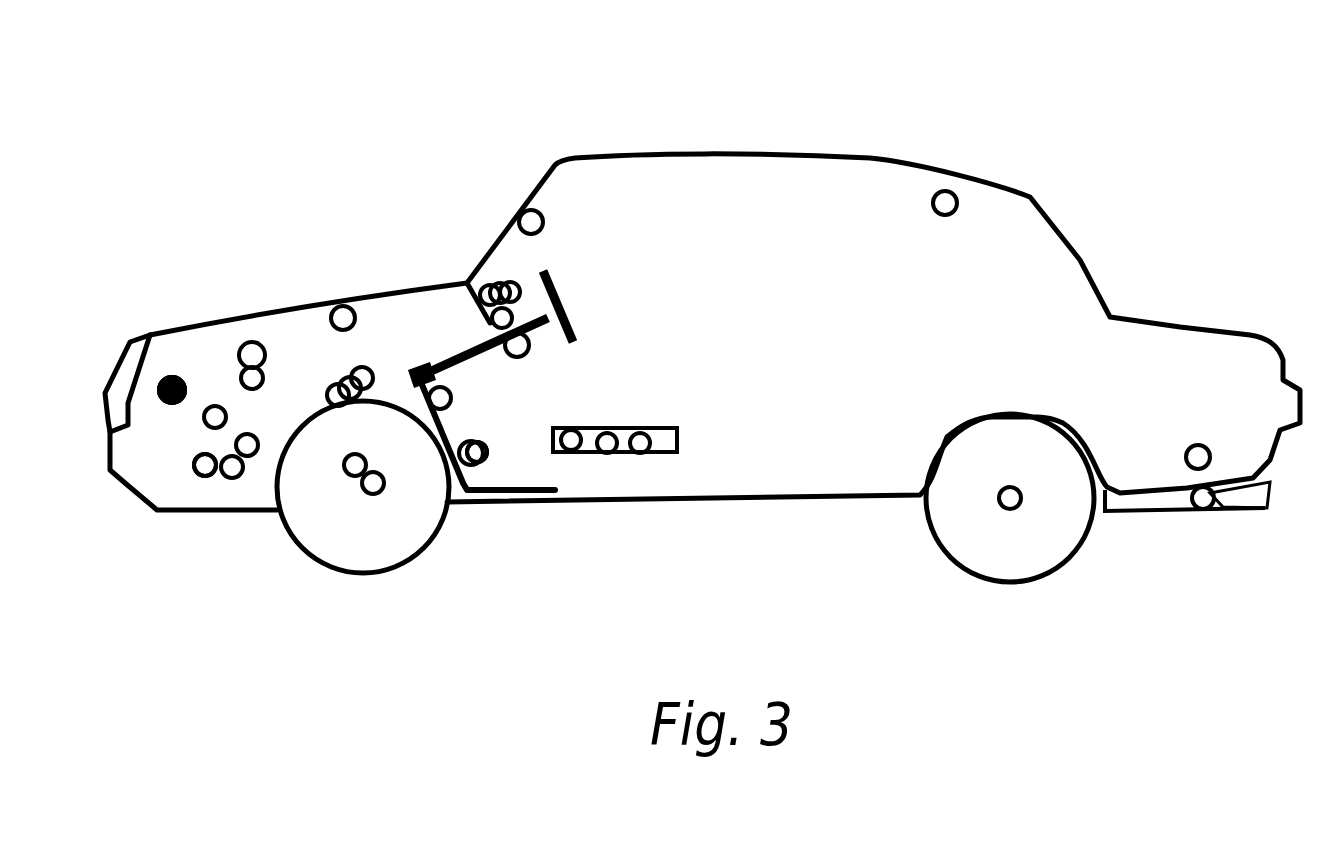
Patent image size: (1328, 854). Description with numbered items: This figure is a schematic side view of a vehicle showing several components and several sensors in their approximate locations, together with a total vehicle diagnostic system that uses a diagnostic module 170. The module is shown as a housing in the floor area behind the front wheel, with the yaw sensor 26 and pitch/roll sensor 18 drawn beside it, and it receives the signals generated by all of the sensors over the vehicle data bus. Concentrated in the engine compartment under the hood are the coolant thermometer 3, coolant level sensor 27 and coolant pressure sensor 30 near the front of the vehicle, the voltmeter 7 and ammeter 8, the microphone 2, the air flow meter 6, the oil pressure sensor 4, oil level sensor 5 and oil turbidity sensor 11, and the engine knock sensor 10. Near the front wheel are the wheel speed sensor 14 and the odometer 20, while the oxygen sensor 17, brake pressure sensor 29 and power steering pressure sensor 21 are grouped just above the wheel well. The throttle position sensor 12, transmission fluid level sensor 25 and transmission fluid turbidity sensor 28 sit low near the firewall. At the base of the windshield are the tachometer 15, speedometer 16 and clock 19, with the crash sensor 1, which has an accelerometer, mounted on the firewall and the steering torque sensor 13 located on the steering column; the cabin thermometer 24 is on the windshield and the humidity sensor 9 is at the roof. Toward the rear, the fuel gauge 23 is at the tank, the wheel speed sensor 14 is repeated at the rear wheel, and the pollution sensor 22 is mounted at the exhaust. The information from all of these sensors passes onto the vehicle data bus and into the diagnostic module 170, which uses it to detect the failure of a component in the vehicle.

The crash sensor 1 is at (446, 408).
The microphone 2 is at (340, 307).
The coolant thermometer 3 is at (186, 382).
The oil pressure sensor 4 is at (193, 461).
The oil level sensor 5 is at (194, 461).
The air flow meter 6 is at (205, 421).
The voltmeter 7 is at (243, 350).
The ammeter 8 is at (243, 386).
The humidity sensor 9 is at (937, 193).
The engine knock sensor 10 is at (253, 452).
The oil turbidity sensor 11 is at (224, 474).
The throttle position sensor 12 is at (463, 463).
The steering torque sensor 13 is at (518, 358).
The wheel speed sensor 14 is at (1012, 510).
The tachometer 15 is at (482, 291).
The speedometer 16 is at (495, 284).
The oxygen sensor 17 is at (336, 406).
The pitch/roll sensor 18 is at (611, 428).
The clock 19 is at (492, 320).
The odometer 20 is at (505, 282).
The power steering pressure sensor 21 is at (641, 428).
The pollution sensor 22 is at (1205, 510).
The fuel gauge 23 is at (1196, 446).
The cabin thermometer 24 is at (527, 211).
The transmission fluid level sensor 25 is at (477, 466).
The yaw sensor 26 is at (578, 455).
The coolant level sensor 27 is at (186, 381).
The transmission fluid turbidity sensor 28 is at (484, 462).
The brake pressure sensor 29 is at (349, 400).
The coolant pressure sensor 30 is at (186, 380).
The diagnostic module 170 is at (670, 428).